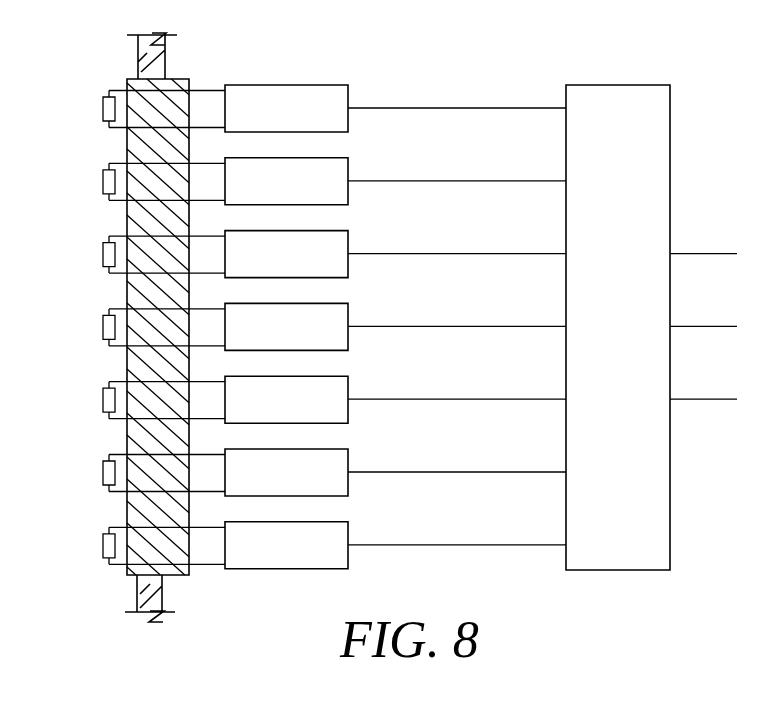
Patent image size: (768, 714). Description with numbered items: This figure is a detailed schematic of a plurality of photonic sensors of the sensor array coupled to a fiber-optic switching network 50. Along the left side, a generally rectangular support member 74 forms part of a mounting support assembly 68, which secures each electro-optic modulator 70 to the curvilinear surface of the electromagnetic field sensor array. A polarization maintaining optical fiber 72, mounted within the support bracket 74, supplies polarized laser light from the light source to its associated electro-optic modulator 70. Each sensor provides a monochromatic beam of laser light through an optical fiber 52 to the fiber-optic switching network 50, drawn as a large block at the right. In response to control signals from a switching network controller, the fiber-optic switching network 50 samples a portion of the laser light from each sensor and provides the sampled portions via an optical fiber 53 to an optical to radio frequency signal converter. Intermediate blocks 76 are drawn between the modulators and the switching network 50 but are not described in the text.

The fiber-optic switching network 50 is at (652, 88).
The optical fiber 52 is at (512, 106).
The optical fiber 53 is at (718, 252).
The mounting support assembly 68 is at (138, 60).
The electro-optic modulator 70 is at (103, 168).
The polarization maintaining optical fiber 72 is at (118, 566).
The support member 74 is at (180, 76).
The signal conditioning circuits 76 is at (329, 90).